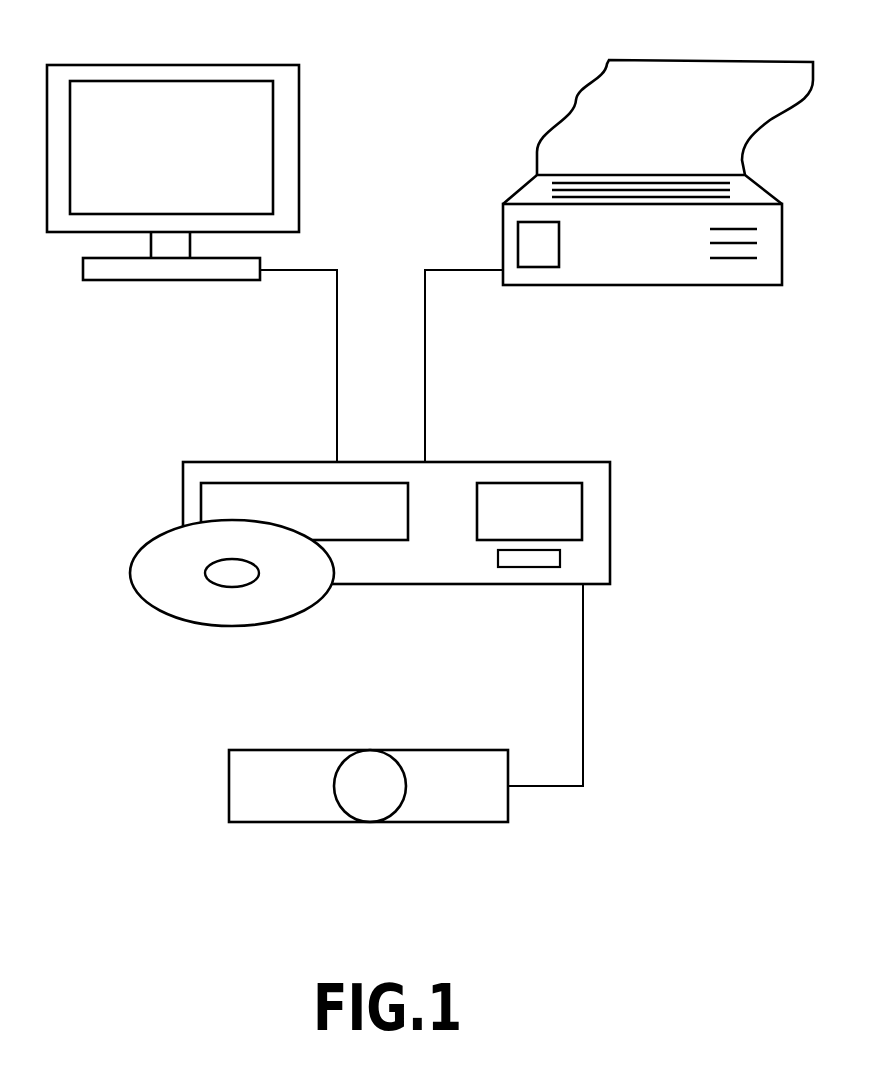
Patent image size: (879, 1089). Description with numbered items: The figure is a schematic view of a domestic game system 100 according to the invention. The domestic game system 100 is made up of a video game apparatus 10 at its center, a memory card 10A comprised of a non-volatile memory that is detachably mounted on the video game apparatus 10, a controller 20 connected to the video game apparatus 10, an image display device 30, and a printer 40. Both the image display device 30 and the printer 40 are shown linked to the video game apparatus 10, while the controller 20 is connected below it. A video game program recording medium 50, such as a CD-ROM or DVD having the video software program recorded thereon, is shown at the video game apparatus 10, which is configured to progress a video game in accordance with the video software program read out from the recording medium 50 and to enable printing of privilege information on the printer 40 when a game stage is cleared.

The domestic game system 100 is at (645, 638).
The video game apparatus 10 is at (183, 485).
The memory card 10A is at (523, 558).
The controller 20 is at (229, 785).
The image display device 30 is at (96, 282).
The printer 40 is at (687, 270).
The video game program recording medium 50 is at (177, 598).